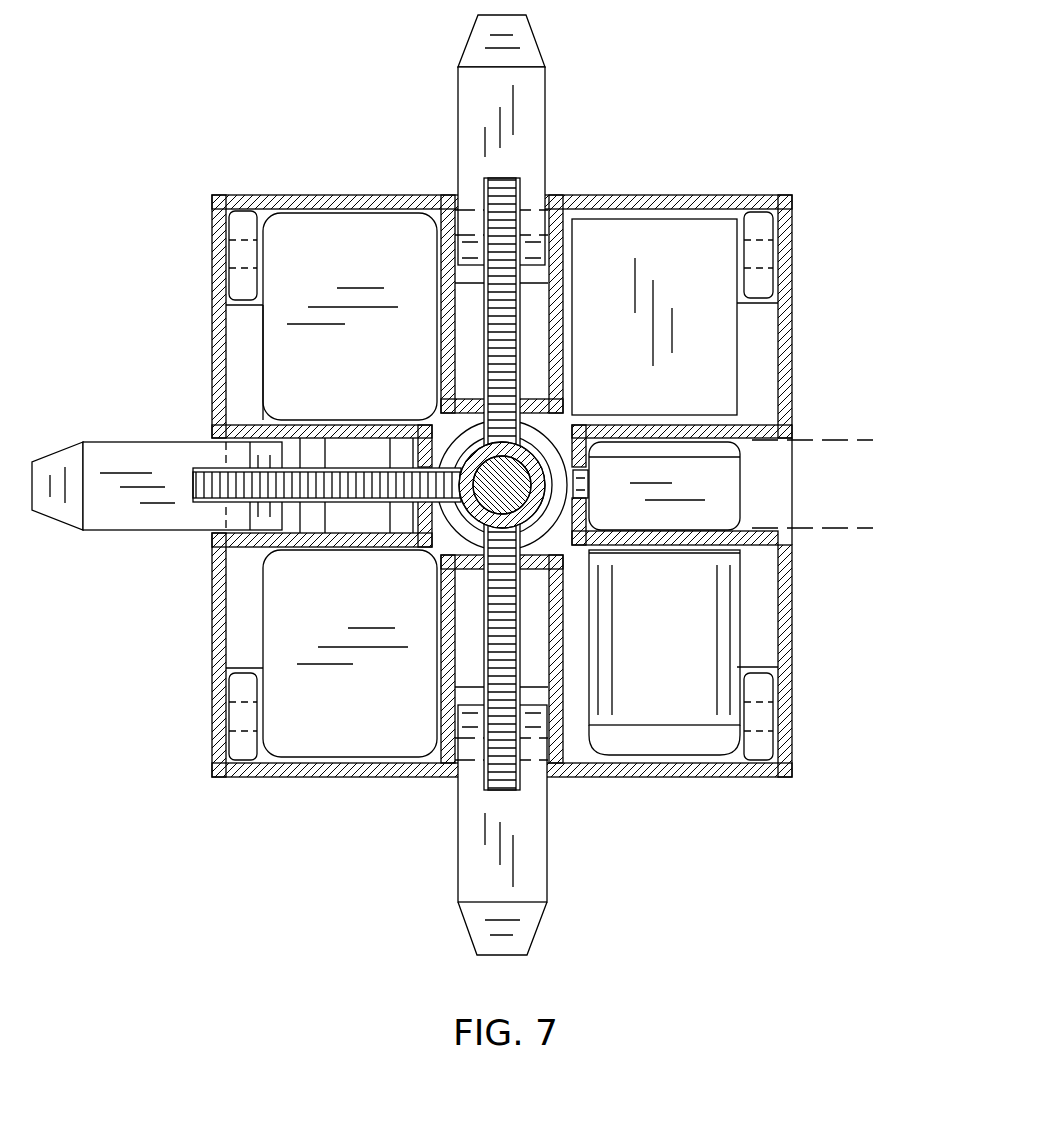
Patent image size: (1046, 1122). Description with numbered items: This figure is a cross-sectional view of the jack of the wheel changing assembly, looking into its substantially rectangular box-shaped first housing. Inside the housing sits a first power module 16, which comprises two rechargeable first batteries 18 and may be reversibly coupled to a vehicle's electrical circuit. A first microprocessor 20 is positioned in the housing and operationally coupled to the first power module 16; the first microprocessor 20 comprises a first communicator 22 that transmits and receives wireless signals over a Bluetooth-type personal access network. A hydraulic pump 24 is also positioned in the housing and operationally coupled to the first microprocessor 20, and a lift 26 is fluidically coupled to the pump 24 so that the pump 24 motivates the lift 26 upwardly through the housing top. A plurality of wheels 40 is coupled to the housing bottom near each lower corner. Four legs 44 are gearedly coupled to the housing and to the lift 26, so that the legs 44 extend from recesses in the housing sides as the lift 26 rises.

The first power module 16 is at (348, 230).
The first batteries 18 is at (330, 392).
The first microprocessor 20 is at (650, 237).
The first communicator 22 is at (700, 250).
The pump 24 is at (693, 640).
The lift 26 is at (510, 488).
The wheels 40 is at (240, 714).
The legs 44 is at (480, 857).